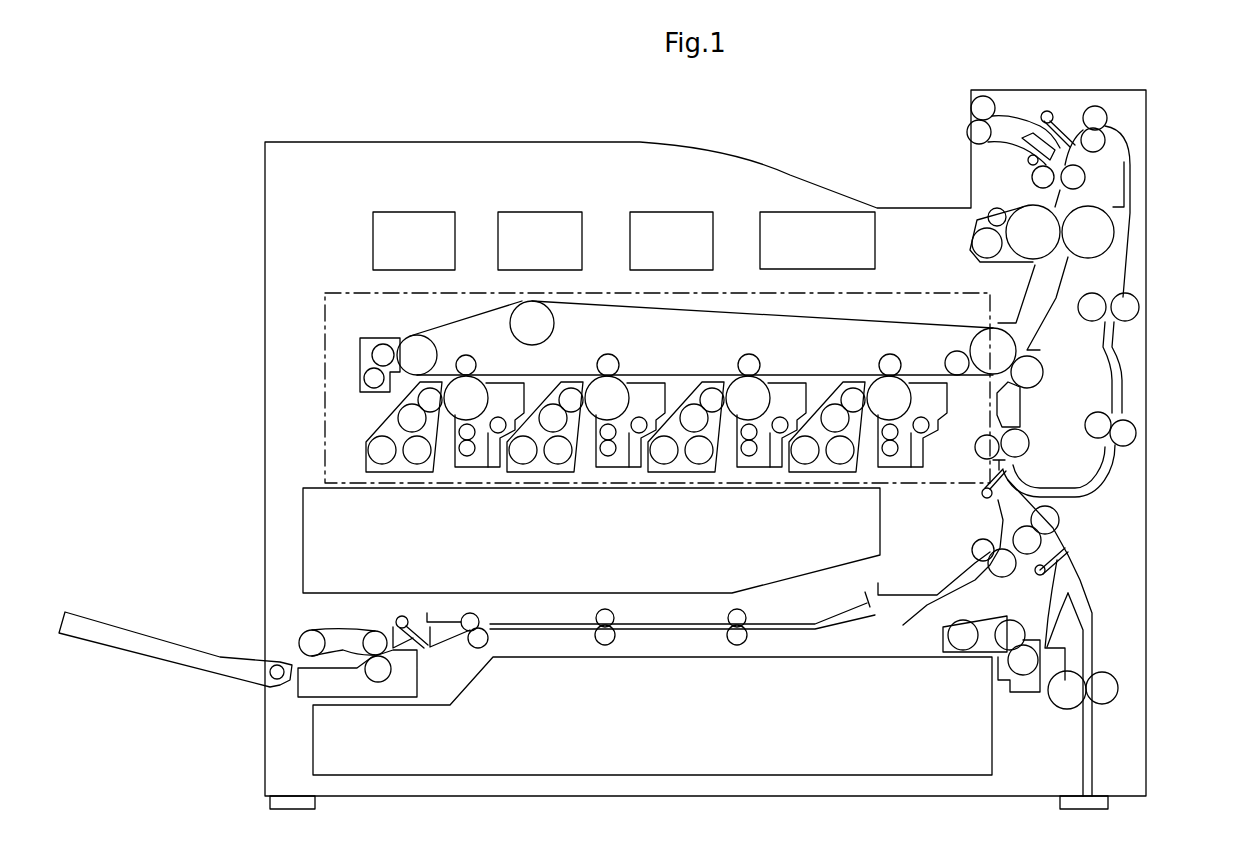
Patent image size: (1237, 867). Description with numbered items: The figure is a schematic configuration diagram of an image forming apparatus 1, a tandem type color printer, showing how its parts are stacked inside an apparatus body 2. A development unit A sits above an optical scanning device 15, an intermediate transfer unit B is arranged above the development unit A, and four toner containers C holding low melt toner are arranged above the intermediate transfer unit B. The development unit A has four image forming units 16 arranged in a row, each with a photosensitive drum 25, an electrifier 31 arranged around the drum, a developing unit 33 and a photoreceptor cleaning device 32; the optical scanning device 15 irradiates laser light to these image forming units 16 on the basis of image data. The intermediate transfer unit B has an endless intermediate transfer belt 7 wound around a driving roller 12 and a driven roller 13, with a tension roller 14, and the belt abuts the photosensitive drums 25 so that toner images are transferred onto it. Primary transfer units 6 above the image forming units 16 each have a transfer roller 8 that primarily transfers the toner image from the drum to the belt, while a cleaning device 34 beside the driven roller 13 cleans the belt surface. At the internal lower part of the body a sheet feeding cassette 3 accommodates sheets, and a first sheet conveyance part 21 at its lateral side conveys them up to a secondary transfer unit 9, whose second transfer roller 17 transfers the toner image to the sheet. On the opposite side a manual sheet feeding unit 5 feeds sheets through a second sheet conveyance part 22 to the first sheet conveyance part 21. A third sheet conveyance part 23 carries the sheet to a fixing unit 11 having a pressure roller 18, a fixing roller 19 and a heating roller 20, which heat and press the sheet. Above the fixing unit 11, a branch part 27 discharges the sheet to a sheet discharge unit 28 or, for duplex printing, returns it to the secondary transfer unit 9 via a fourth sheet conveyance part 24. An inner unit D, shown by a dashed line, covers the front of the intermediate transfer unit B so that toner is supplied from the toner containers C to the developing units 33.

The image forming apparatus 1 is at (647, 119).
The apparatus body 2 is at (340, 142).
The sheet feeding cassette 3 is at (790, 796).
The manual sheet feeding unit 5 is at (133, 632).
The primary transfer unit 6 is at (457, 352).
The intermediate transfer belt 7 is at (712, 298).
The transfer roller 8 is at (467, 354).
The secondary transfer unit 9 is at (1038, 396).
The fixing unit 11 is at (1057, 199).
The driving roller 12 is at (985, 342).
The driven roller 13 is at (420, 367).
The tension roller 14 is at (536, 346).
The optical scanning device 15 is at (303, 535).
The image forming unit 16 is at (487, 362).
The second transfer roller 17 is at (1045, 368).
The pressure roller 18 is at (1112, 240).
The fixing roller 19 is at (1025, 207).
The heating roller 20 is at (970, 245).
The first sheet conveyance part 21 is at (1072, 550).
The second sheet conveyance part 22 is at (670, 642).
The third sheet conveyance part 23 is at (1020, 292).
The fourth sheet conveyance part 24 is at (1118, 357).
The photosensitive drum 25 is at (482, 378).
The branch part 27 is at (1015, 152).
The sheet discharge unit 28 is at (793, 172).
The electrifier 31 is at (460, 478).
The photoreceptor cleaning device 32 is at (491, 470).
The developing unit 33 is at (385, 473).
The cleaning device 34 is at (360, 370).
The development unit A is at (930, 492).
The intermediate transfer unit B is at (420, 328).
The toner container C is at (420, 212).
The inner unit D is at (343, 293).